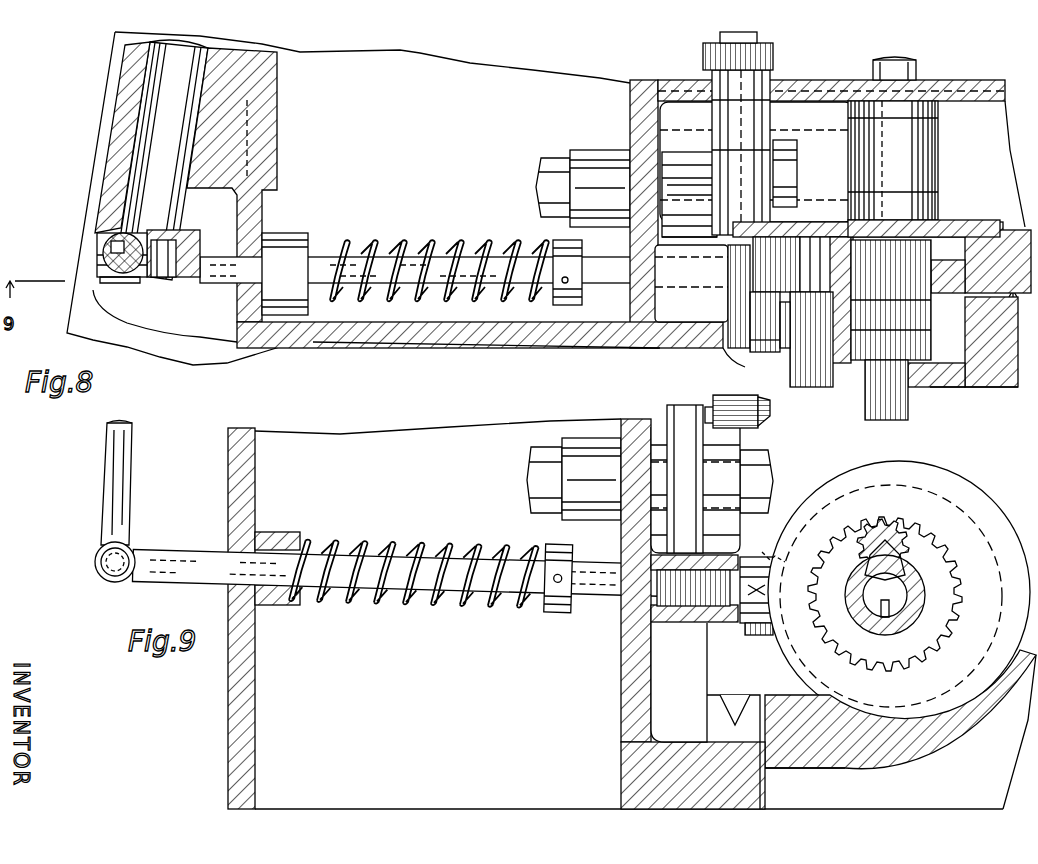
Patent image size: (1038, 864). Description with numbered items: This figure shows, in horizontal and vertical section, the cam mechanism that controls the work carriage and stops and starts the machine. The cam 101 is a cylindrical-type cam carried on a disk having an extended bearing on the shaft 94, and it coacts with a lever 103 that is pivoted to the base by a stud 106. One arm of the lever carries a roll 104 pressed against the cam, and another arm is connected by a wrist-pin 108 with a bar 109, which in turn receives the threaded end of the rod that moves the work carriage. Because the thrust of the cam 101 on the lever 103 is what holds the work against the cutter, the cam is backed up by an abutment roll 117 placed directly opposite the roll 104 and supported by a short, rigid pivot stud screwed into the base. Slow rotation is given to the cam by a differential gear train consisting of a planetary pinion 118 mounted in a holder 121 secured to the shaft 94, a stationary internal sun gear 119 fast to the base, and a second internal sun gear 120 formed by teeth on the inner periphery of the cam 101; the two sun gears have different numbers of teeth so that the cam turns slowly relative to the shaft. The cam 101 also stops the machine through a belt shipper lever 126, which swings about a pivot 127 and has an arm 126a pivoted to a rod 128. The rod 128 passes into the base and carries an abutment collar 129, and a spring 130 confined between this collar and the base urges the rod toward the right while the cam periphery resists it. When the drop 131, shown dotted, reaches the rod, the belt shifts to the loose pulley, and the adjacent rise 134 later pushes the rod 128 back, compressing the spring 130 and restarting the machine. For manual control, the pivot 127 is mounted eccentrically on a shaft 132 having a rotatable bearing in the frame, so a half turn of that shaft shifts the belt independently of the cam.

In FIG. 8, the shaft 94 is at (882, 388).
In FIG. 9, the shaft 94 is at (915, 581).
In FIG. 8, the cam 101 is at (770, 275).
In FIG. 9, the cam 101 is at (920, 468).
In FIG. 8, the lever 103 is at (693, 178).
In FIG. 9, the lever 103 is at (704, 537).
In FIG. 9, the roll 104 is at (752, 640).
In FIG. 8, the stud 106 is at (546, 187).
In FIG. 9, the stud 106 is at (537, 500).
In FIG. 8, the wrist-pin 108 is at (778, 208).
In FIG. 9, the wrist-pin 108 is at (772, 407).
In FIG. 8, the bar 109 is at (760, 112).
In FIG. 9, the bar 109 is at (685, 479).
In FIG. 8, the abutment roll 117 is at (750, 362).
In FIG. 9, the abutment roll 117 is at (744, 633).
In FIG. 8, the planetary pinion 118 is at (930, 345).
In FIG. 9, the planetary pinion 118 is at (907, 537).
In FIG. 8, the sun gear 119 is at (975, 352).
In FIG. 8, the sun gear 120 is at (946, 265).
In FIG. 9, the sun gear 120 is at (917, 600).
In FIG. 8, the holder 121 is at (852, 320).
In FIG. 9, the holder 121 is at (903, 617).
In FIG. 8, the lever 126 is at (110, 233).
In FIG. 9, the arm 126a is at (120, 478).
In FIG. 8, the pivot 127 is at (163, 272).
In FIG. 8, the rod 128 is at (385, 264).
In FIG. 9, the rod 128 is at (180, 562).
In FIG. 8, the abutment collar 129 is at (556, 250).
In FIG. 9, the abutment collar 129 is at (556, 615).
In FIG. 8, the spring 130 is at (340, 250).
In FIG. 9, the spring 130 is at (420, 547).
In FIG. 9, the drop 131 is at (778, 567).
In FIG. 8, the shaft 132 is at (158, 106).
In FIG. 9, the rise 134 is at (796, 670).